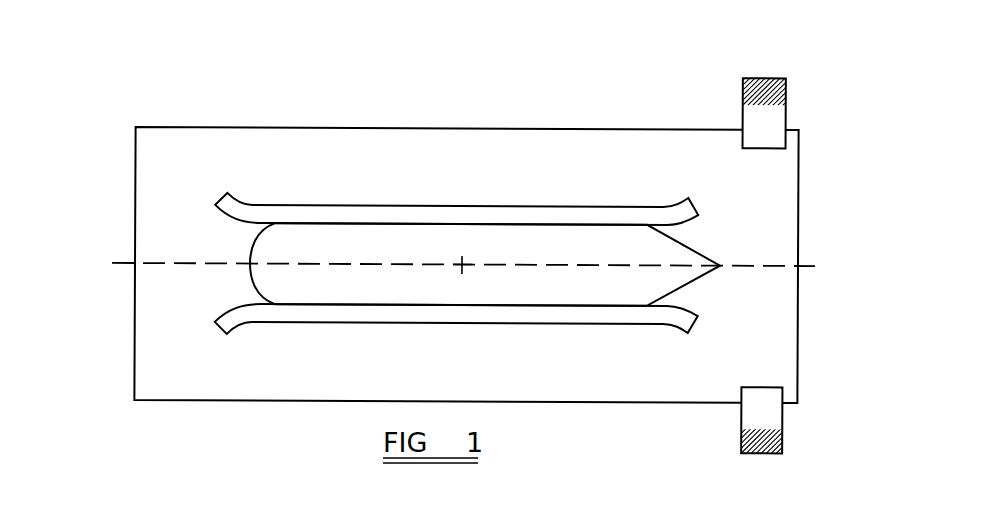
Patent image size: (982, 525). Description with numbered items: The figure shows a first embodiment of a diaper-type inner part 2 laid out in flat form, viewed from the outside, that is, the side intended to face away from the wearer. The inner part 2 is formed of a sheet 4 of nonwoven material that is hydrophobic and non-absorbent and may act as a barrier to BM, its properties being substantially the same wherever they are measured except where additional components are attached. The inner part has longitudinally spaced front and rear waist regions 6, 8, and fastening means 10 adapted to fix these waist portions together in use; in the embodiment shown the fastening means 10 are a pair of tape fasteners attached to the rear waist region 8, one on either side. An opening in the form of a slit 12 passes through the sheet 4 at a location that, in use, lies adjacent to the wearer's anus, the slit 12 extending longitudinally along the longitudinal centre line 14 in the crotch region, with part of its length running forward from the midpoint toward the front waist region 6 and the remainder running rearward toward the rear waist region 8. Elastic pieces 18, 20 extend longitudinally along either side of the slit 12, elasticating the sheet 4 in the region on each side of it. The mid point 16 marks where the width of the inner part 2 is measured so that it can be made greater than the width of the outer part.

The diaper-type inner part 2 is at (268, 98).
The sheet 4 is at (462, 143).
The front waist region 6 is at (158, 240).
The rear waist region 8 is at (758, 233).
The fastening means 10 is at (760, 80).
The slit 12 is at (583, 240).
The longitudinal centre line 14 is at (745, 268).
The mid point 16 is at (466, 268).
The elastic piece 18 is at (356, 213).
The elastic piece 20 is at (322, 313).